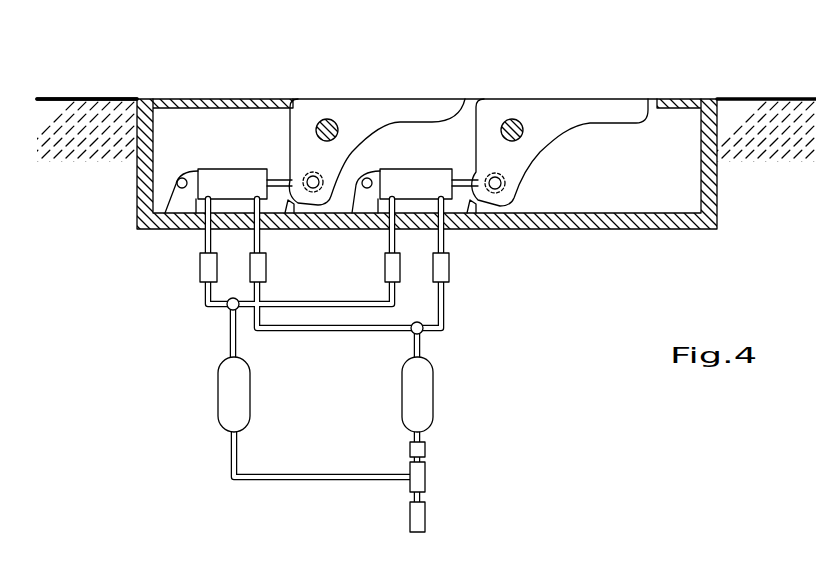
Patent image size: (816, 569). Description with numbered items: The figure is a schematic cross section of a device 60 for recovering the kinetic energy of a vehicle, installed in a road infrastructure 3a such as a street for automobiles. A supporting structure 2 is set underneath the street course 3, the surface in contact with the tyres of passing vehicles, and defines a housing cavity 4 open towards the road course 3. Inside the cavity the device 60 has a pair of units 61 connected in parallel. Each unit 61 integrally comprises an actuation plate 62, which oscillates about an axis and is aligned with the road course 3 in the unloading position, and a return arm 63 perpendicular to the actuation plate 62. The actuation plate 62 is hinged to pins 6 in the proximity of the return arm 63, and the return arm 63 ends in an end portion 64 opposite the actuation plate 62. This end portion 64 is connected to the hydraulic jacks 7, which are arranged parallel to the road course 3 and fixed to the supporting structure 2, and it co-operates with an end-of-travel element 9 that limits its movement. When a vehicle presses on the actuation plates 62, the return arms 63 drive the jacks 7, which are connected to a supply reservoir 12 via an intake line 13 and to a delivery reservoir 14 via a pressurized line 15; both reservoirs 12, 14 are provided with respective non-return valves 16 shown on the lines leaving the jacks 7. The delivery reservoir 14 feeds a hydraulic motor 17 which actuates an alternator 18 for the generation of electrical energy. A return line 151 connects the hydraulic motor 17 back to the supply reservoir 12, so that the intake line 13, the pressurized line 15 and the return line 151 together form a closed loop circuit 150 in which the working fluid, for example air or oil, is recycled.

The supporting structure 2 is at (225, 98).
The street course 3 is at (748, 98).
The road infrastructure 3a is at (106, 97).
The housing cavity 4 is at (700, 153).
The pin 6 is at (335, 122).
The hydraulic jack 7 is at (230, 168).
The end-of-travel element 9 is at (288, 215).
The supply reservoir 12 is at (216, 386).
The intake line 13 is at (332, 350).
The delivery reservoir 14 is at (435, 417).
The pressurized line 15 is at (421, 336).
The non-return valve 16 is at (200, 270).
The hydraulic motor 17 is at (427, 475).
The alternator 18 is at (428, 516).
The device 60 is at (408, 183).
The unit 61 is at (445, 145).
The actuation plate 62 is at (445, 152).
The return arm 63 is at (445, 184).
The end portion 64 is at (322, 205).
The closed loop circuit 150 is at (323, 365).
The return line 151 is at (332, 363).